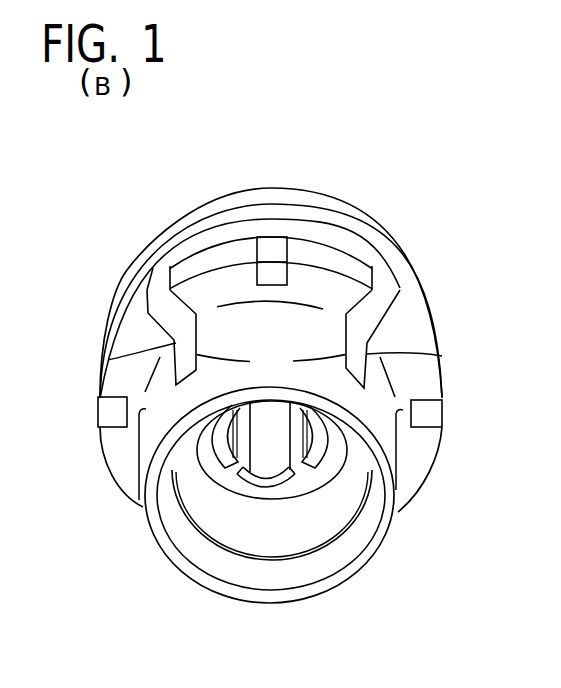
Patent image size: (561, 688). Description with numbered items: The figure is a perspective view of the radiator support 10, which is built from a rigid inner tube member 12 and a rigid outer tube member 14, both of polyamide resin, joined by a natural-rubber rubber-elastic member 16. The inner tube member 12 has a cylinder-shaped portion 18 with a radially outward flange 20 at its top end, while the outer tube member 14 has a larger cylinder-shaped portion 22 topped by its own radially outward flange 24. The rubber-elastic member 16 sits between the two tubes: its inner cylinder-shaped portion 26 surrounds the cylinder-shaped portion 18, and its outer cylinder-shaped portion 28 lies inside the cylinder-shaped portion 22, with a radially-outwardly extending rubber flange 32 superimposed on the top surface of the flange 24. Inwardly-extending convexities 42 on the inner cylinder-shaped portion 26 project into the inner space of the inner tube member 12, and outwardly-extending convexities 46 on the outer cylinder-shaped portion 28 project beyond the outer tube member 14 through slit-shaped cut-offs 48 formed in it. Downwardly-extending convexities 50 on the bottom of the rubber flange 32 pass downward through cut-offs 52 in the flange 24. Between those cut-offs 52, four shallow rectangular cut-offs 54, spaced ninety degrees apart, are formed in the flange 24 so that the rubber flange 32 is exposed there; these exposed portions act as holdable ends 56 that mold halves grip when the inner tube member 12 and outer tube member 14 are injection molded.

The radiator support 10 is at (457, 118).
The rigid inner tube member 12 is at (213, 184).
The rigid outer tube member 14 is at (446, 462).
The rubber-elastic member 16 is at (440, 297).
The cylinder-shaped portion 18 is at (295, 445).
The flange 20 is at (362, 220).
The cylinder-shaped portion 22 is at (139, 433).
The flange 24 is at (147, 291).
The inner cylinder-shaped portion 26 is at (332, 440).
The outer cylinder-shaped portion 28 is at (178, 491).
The rubber flange 32 is at (137, 263).
The inwardly-extending convexities 42 is at (238, 445).
The outwardly-extending convexities 46 is at (108, 360).
The slit-shaped cut-offs 48 is at (271, 362).
The downwardly-extending convexities 50 is at (130, 297).
The cut-offs 52 is at (148, 258).
The cut-offs 54 is at (285, 262).
The holdable ends 56 is at (274, 248).